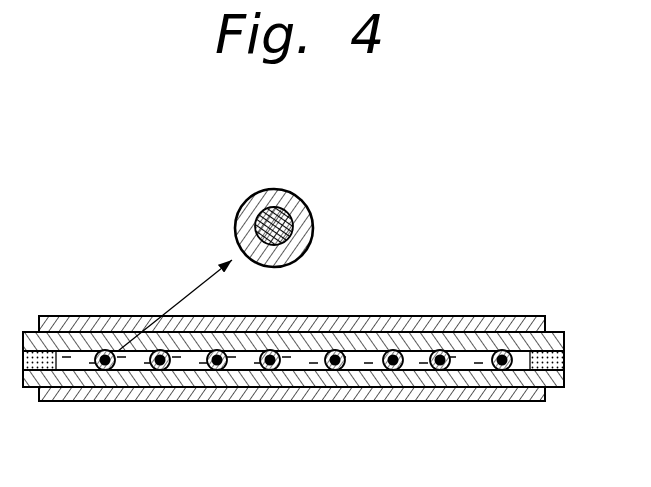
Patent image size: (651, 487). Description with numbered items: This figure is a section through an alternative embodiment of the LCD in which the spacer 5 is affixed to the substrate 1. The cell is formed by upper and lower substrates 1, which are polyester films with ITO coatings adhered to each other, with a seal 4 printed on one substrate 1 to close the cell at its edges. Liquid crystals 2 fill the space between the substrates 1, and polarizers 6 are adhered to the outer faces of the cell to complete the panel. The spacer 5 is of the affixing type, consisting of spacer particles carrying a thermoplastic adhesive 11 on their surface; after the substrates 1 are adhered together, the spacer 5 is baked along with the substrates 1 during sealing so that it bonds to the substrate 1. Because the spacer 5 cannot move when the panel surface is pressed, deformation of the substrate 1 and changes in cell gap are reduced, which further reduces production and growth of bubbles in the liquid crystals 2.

The substrate 1 is at (565, 331).
The liquid crystals 2 is at (455, 351).
The seal 4 is at (567, 354).
The spacer 5 is at (256, 199).
The polarizer 6 is at (531, 316).
The thermoplastic adhesive 11 is at (313, 214).